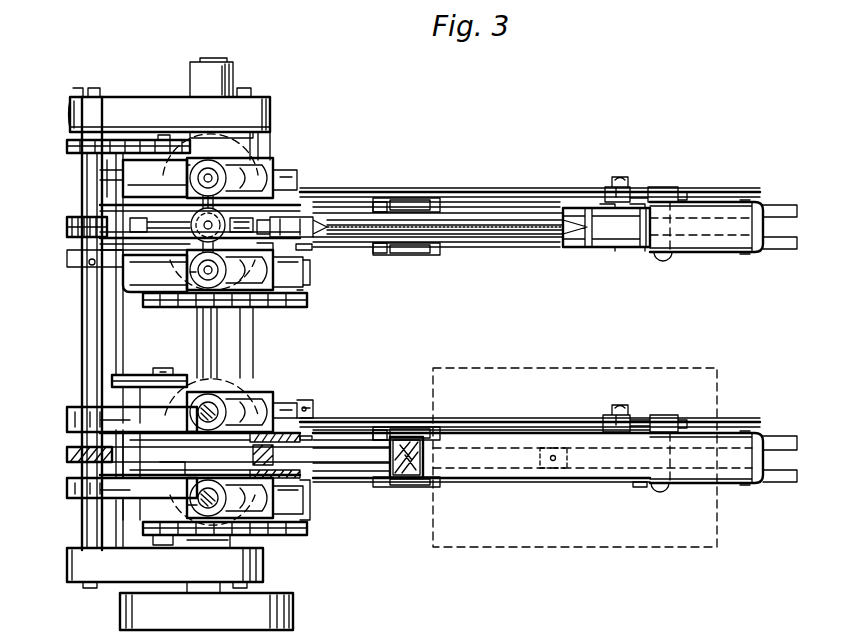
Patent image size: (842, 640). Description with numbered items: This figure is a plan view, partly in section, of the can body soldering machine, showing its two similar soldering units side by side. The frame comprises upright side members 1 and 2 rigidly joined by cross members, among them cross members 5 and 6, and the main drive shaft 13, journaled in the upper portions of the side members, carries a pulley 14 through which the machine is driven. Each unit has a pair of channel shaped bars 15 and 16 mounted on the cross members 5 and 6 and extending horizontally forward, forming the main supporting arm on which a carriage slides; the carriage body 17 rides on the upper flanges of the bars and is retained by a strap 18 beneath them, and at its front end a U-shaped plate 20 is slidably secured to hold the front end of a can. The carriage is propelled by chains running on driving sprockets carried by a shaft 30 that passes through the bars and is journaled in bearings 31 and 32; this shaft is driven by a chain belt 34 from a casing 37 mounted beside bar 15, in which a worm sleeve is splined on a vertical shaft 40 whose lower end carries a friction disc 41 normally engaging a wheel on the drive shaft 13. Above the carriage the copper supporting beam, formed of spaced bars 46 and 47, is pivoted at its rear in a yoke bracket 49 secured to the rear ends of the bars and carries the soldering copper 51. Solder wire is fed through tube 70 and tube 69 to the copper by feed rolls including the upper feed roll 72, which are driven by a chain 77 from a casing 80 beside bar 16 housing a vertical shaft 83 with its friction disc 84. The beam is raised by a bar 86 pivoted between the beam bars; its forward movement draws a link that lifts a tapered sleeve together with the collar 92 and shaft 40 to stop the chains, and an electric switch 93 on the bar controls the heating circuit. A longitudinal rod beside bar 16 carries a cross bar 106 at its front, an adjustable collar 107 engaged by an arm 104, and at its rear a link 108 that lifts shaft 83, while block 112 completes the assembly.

The upright side member 1 is at (262, 568).
The upright side member 2 is at (140, 112).
The cross member 5 is at (82, 334).
The cross member 6 is at (254, 350).
The main drive shaft 13 is at (199, 330).
The pulley 14 is at (293, 612).
The channel shaped bar 15 is at (347, 477).
The channel shaped bar 16 is at (340, 438).
The carriage body 17 is at (588, 478).
The strap 18 is at (512, 469).
The U-shaped plate 20 is at (758, 432).
The shaft 30 is at (290, 458).
The bearing 31 is at (300, 480).
The bearing 32 is at (308, 412).
The chain belt 34 is at (265, 534).
The casing 37 is at (125, 506).
The vertical shaft 40 is at (123, 500).
The friction disc 41 is at (193, 542).
The beam bar 46 is at (500, 238).
The beam bar 47 is at (502, 224).
The yoke bracket 49 is at (68, 452).
The soldering copper 51 is at (607, 235).
The solder feed tube 69 is at (250, 280).
The solder feed tube 70 is at (125, 272).
The upper solder feed roll 72 is at (70, 222).
The chain 77 is at (128, 140).
The casing 80 is at (140, 392).
The vertical shaft 83 is at (236, 402).
The friction disc 84 is at (194, 392).
The bar 86 is at (270, 432).
The collar 92 is at (183, 470).
The electric switch 93 is at (290, 218).
The arm 104 is at (655, 188).
The cross bar 106 is at (666, 259).
The adjustable collar 107 is at (613, 186).
The link 108 is at (246, 166).
The slide block 112 is at (246, 216).